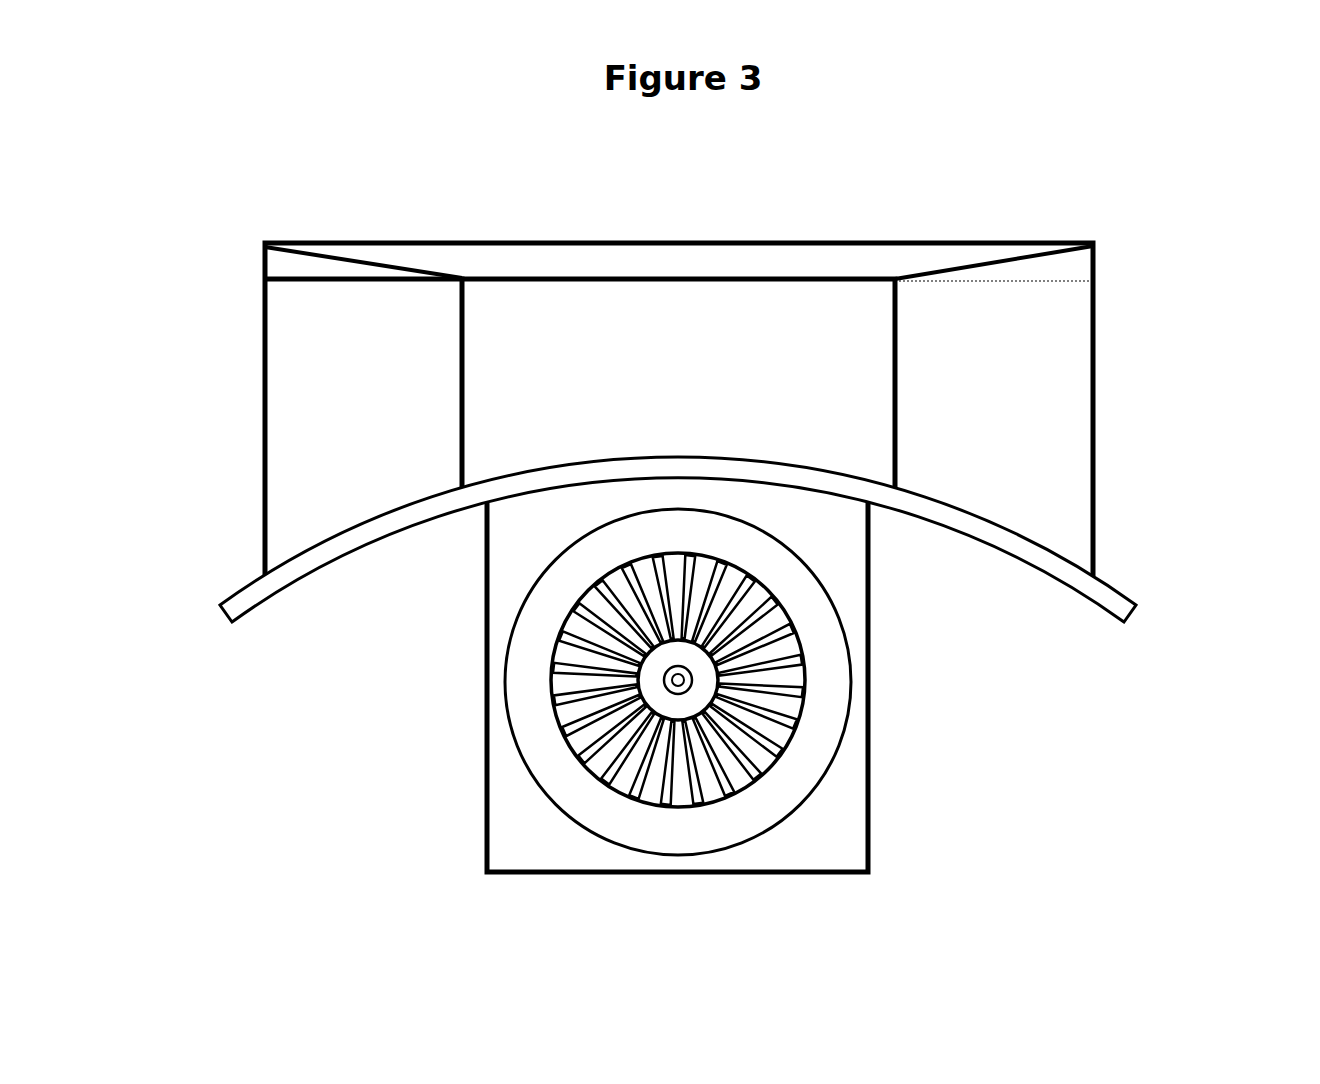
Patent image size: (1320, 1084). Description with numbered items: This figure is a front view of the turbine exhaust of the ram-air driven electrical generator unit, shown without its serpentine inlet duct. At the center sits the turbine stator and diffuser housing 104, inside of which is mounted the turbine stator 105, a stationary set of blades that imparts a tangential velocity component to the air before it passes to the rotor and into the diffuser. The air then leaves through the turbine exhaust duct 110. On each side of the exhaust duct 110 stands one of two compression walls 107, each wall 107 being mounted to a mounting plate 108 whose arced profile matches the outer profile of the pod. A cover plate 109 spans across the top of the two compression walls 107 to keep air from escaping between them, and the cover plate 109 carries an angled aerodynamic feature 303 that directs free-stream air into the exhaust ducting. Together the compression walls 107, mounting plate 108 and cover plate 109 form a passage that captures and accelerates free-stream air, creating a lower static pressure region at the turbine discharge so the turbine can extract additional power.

The angled aerodynamic feature 303 is at (892, 262).
The cover plate 109 is at (1070, 262).
The compression walls 107 is at (280, 470).
The mounting plate 108 is at (308, 562).
The turbine exhaust duct 110 is at (845, 604).
The turbine stator and diffuser housing 104 is at (832, 690).
The turbine stator 105 is at (592, 725).